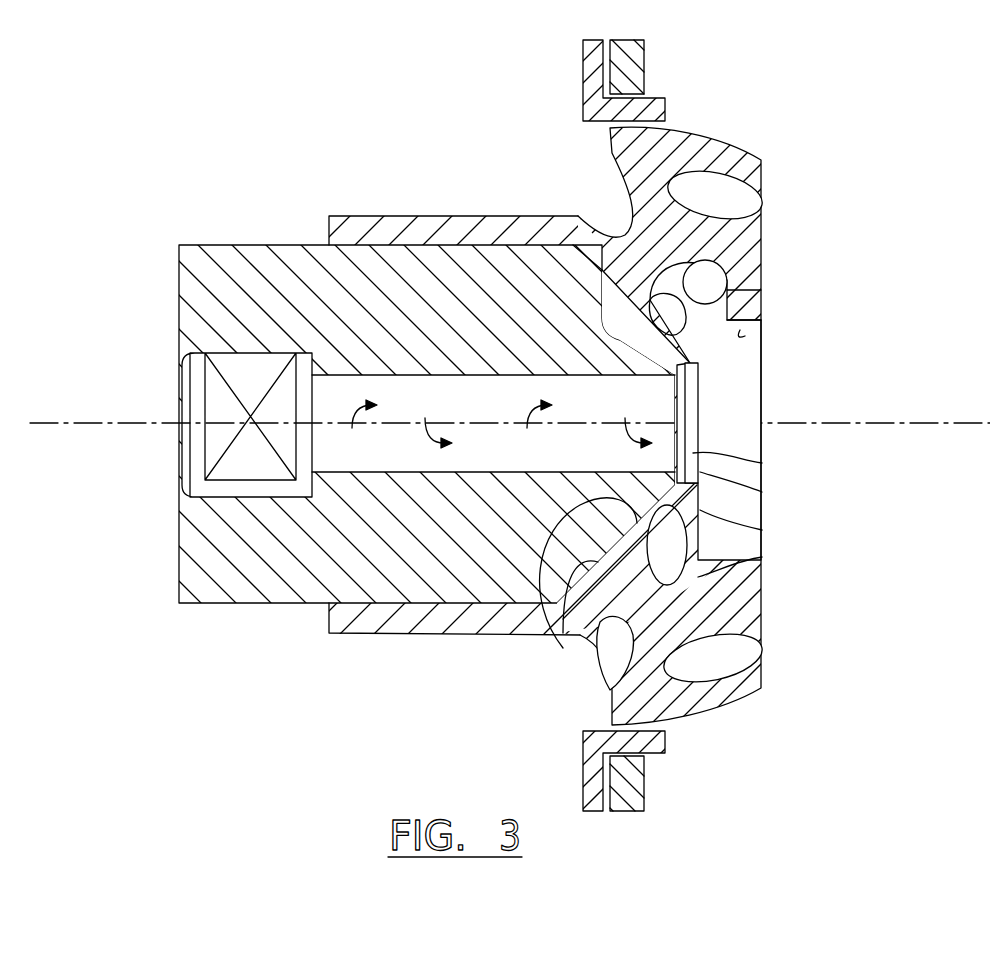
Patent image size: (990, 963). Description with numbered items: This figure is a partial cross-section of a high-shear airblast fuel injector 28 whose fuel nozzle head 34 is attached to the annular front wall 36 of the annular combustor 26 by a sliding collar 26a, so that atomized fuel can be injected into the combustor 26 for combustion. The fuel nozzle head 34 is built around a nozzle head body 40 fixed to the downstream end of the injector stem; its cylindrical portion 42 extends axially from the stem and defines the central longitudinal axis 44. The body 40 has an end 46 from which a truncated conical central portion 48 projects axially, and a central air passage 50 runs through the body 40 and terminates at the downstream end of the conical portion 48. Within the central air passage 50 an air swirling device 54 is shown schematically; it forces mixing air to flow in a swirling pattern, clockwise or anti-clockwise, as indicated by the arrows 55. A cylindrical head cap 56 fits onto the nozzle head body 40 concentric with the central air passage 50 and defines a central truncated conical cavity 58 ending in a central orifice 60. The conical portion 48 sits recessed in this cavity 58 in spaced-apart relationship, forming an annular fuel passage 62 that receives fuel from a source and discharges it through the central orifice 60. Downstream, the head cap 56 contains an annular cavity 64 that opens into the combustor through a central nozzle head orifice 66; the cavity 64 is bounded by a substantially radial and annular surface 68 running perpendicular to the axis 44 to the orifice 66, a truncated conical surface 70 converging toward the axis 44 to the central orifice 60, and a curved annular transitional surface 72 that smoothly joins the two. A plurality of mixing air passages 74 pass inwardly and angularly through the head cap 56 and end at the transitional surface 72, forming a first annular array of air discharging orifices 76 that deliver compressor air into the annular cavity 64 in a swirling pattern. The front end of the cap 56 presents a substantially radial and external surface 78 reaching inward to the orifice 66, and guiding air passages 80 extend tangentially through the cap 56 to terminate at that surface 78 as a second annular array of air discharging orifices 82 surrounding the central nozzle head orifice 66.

The annular combustor 26 is at (906, 315).
The sliding collar 26a is at (587, 812).
The fuel injector 28 is at (213, 622).
The fuel nozzle head 34 is at (468, 636).
The annular front wall 36 is at (645, 68).
The nozzle head body 40 is at (303, 577).
The cylindrical portion 42 is at (422, 635).
The central longitudinal axis 44 is at (965, 425).
The end 46 is at (563, 592).
The truncated conical central portion 48 is at (590, 625).
The central air passage 50 is at (386, 372).
The air swirling device 54 is at (233, 470).
The arrows (swirling direction) 55 is at (526, 402).
The cylindrical head cap 56 is at (695, 718).
The central truncated conical cavity 58 is at (688, 522).
The central orifice 60 is at (700, 505).
The annular fuel passage 62 is at (698, 487).
The annular cavity 64 is at (703, 572).
The central nozzle head orifice 66 is at (750, 330).
The substantially radial and annular surface 68 is at (723, 273).
The truncated conical surface 70 is at (725, 520).
The curved annular transitional surface 72 is at (725, 600).
The mixing air passages 74 is at (608, 212).
The first annular array of air discharging orifices 76 is at (745, 365).
The substantially radial and external surface 78 is at (762, 172).
The guiding air passages 80 is at (745, 655).
The second annular array of air discharging orifices 82 is at (765, 203).